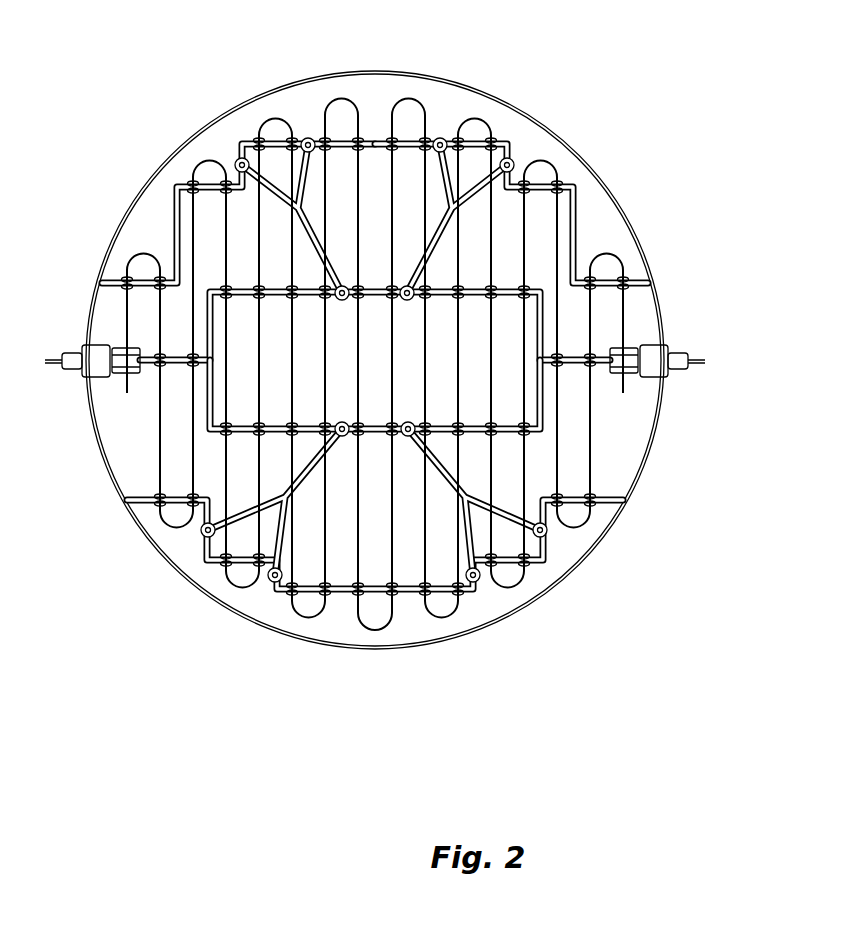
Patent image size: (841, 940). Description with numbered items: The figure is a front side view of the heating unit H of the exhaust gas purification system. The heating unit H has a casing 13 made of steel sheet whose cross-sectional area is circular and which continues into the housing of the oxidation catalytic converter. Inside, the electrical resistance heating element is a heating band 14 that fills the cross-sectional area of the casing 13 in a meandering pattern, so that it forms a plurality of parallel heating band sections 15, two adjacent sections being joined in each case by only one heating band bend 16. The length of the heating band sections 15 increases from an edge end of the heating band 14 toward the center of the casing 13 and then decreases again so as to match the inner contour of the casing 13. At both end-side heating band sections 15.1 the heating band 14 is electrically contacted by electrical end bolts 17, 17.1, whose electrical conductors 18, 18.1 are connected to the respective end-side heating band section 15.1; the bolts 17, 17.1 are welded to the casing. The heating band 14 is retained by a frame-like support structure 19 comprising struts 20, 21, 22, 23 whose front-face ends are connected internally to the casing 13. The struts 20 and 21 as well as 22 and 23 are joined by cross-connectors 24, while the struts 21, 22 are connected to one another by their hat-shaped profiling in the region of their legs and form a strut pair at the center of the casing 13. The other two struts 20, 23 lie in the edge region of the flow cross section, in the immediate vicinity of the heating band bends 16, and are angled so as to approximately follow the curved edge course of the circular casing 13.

The heating unit H is at (192, 115).
The casing 13 is at (530, 113).
The heating band 14 is at (502, 197).
The heating band sections 15 is at (357, 545).
The end-side heating band sections 15.1 is at (123, 330).
The heating band bend 16 is at (320, 100).
The electrical end bolt 17 is at (104, 383).
The electrical end bolt 17.1 is at (652, 385).
The electrical conductor 18 is at (63, 372).
The electrical conductor 18.1 is at (677, 350).
The support structure 19 is at (163, 208).
The strut 20 is at (547, 518).
The strut 21 is at (548, 422).
The strut 22 is at (540, 292).
The strut 23 is at (578, 197).
The cross-connectors 24 is at (435, 210).